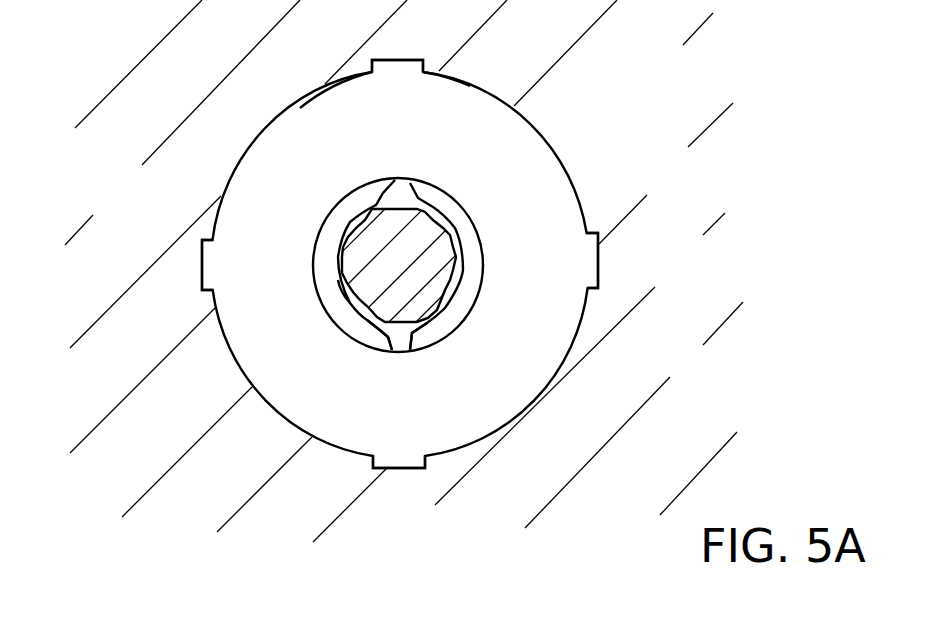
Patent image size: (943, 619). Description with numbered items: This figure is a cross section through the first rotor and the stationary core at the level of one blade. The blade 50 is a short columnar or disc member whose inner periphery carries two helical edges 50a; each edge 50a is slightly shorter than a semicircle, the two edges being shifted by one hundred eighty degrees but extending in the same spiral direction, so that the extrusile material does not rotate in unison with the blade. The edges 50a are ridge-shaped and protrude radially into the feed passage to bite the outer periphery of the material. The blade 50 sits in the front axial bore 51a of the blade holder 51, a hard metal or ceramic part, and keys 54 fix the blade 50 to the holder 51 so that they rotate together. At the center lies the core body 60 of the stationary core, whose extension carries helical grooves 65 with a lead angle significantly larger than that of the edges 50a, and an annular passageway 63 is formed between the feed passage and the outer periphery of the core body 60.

The blade 50 is at (507, 160).
The helical edge 50a is at (470, 245).
The blade holder 51 is at (273, 87).
The front axial bore 51a is at (464, 82).
The key 54 is at (598, 263).
The core body 60 is at (413, 289).
The annular passageway 63 is at (333, 285).
The helical groove 65 is at (402, 322).